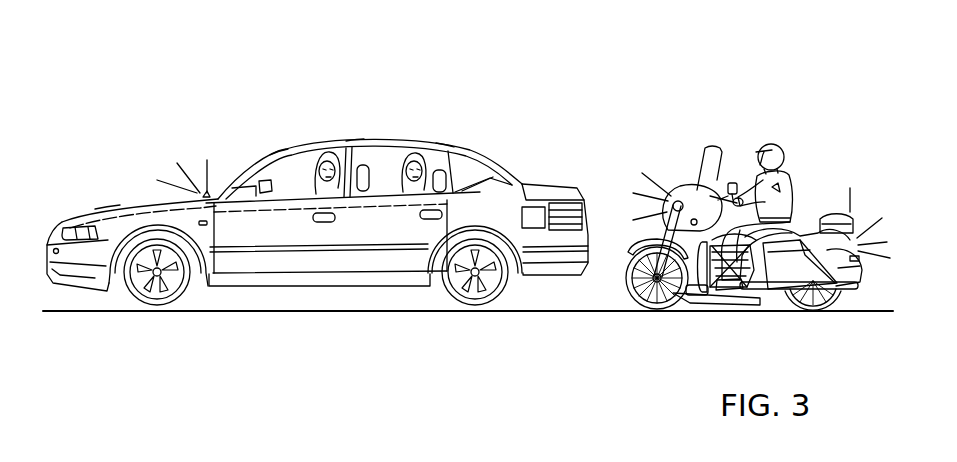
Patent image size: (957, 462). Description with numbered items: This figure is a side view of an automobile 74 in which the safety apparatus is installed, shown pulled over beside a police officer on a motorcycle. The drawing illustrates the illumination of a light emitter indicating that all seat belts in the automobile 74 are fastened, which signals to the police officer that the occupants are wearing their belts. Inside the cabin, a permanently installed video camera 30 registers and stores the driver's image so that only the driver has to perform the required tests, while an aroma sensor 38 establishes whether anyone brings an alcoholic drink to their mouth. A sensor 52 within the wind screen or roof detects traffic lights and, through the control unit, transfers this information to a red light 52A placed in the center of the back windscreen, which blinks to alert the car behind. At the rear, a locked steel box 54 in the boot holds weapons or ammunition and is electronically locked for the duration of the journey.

The video camera 30 is at (296, 153).
The aroma sensor 38 is at (354, 140).
The sensor 52 is at (278, 148).
The red light 52A is at (443, 147).
The steel box 54 is at (532, 228).
The automobile 74 is at (106, 206).